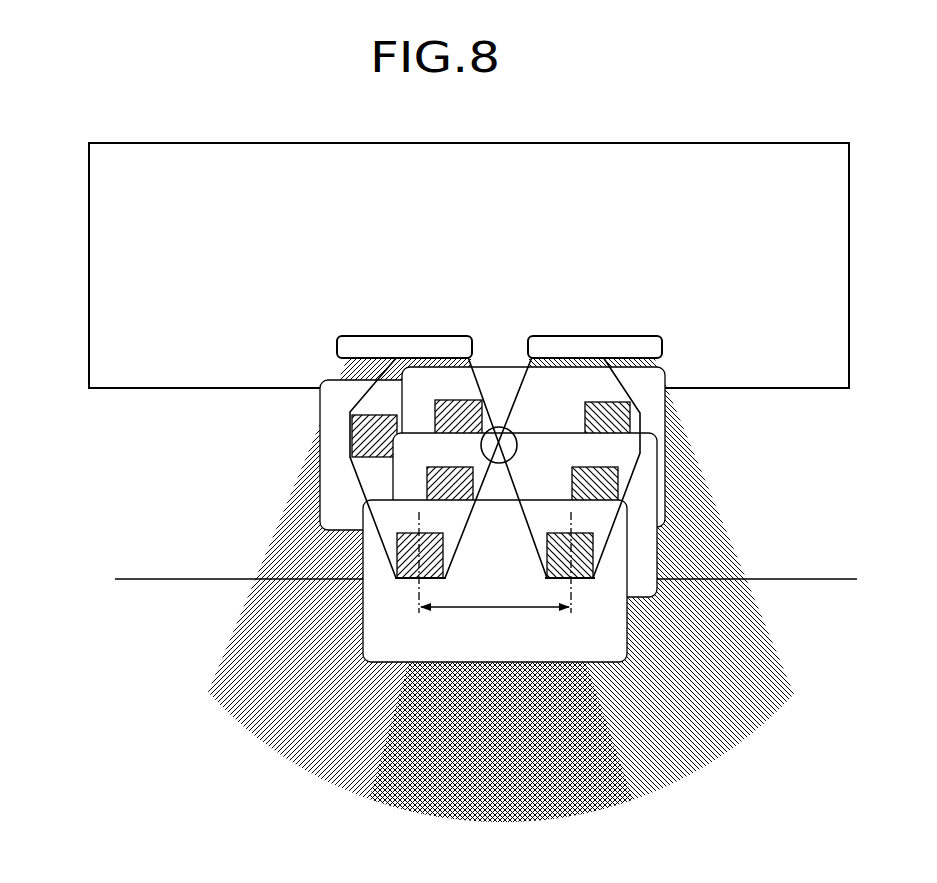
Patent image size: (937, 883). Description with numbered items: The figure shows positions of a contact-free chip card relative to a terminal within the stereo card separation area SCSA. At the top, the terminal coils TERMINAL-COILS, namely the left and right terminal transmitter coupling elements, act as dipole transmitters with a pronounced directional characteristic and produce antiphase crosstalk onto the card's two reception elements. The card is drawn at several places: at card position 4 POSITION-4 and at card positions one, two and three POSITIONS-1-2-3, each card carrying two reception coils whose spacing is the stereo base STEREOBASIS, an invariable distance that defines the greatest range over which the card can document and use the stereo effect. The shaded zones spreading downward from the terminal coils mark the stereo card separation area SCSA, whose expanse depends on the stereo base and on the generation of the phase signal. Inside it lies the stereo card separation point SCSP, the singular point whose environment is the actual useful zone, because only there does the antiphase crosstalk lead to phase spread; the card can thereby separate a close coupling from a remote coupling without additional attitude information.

The terminal coils TERMINAL-COILS is at (499, 279).
The card position 4 POSITION-4 is at (317, 400).
The card positions 1, 2, 3 POSITIONS-1-2-3 is at (620, 514).
The stereo card separation point SCSP is at (479, 448).
The stereo card separation area SCSA is at (373, 525).
The stereo base STEREOBASIS is at (493, 580).